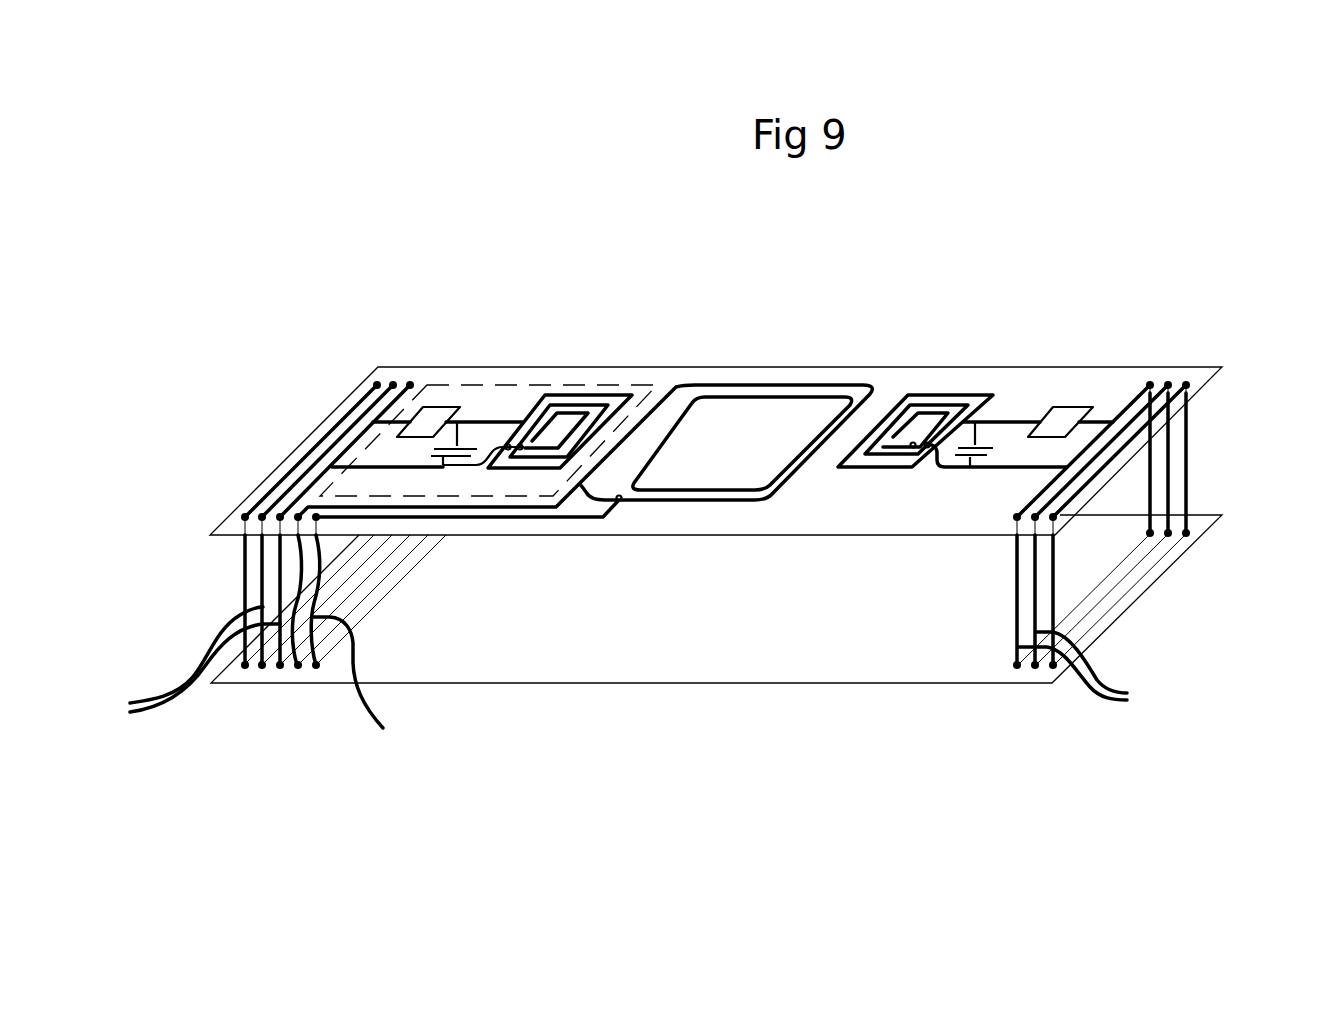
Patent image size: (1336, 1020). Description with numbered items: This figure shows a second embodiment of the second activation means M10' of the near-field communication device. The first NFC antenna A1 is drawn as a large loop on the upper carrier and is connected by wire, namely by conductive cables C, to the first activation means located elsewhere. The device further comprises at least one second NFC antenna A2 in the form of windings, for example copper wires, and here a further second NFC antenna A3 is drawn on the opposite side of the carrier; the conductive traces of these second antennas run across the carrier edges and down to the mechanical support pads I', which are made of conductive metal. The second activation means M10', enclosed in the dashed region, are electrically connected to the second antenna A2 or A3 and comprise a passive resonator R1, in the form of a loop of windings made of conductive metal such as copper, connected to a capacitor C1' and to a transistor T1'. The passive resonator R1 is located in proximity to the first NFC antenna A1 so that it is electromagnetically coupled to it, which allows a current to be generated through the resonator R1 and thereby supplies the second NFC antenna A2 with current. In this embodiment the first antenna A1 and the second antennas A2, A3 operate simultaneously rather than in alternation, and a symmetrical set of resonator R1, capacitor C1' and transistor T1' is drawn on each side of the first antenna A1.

The first NFC antenna A1 is at (756, 385).
The second NFC antenna A2 is at (338, 422).
The second NFC antenna A3 is at (1127, 438).
The transistor T1' is at (755, 359).
The capacitor C1' is at (686, 380).
The second activation means M10' is at (488, 389).
The passive resonator R1 is at (590, 395).
The conductive cables C is at (358, 686).
The mechanical support pads I' is at (628, 665).